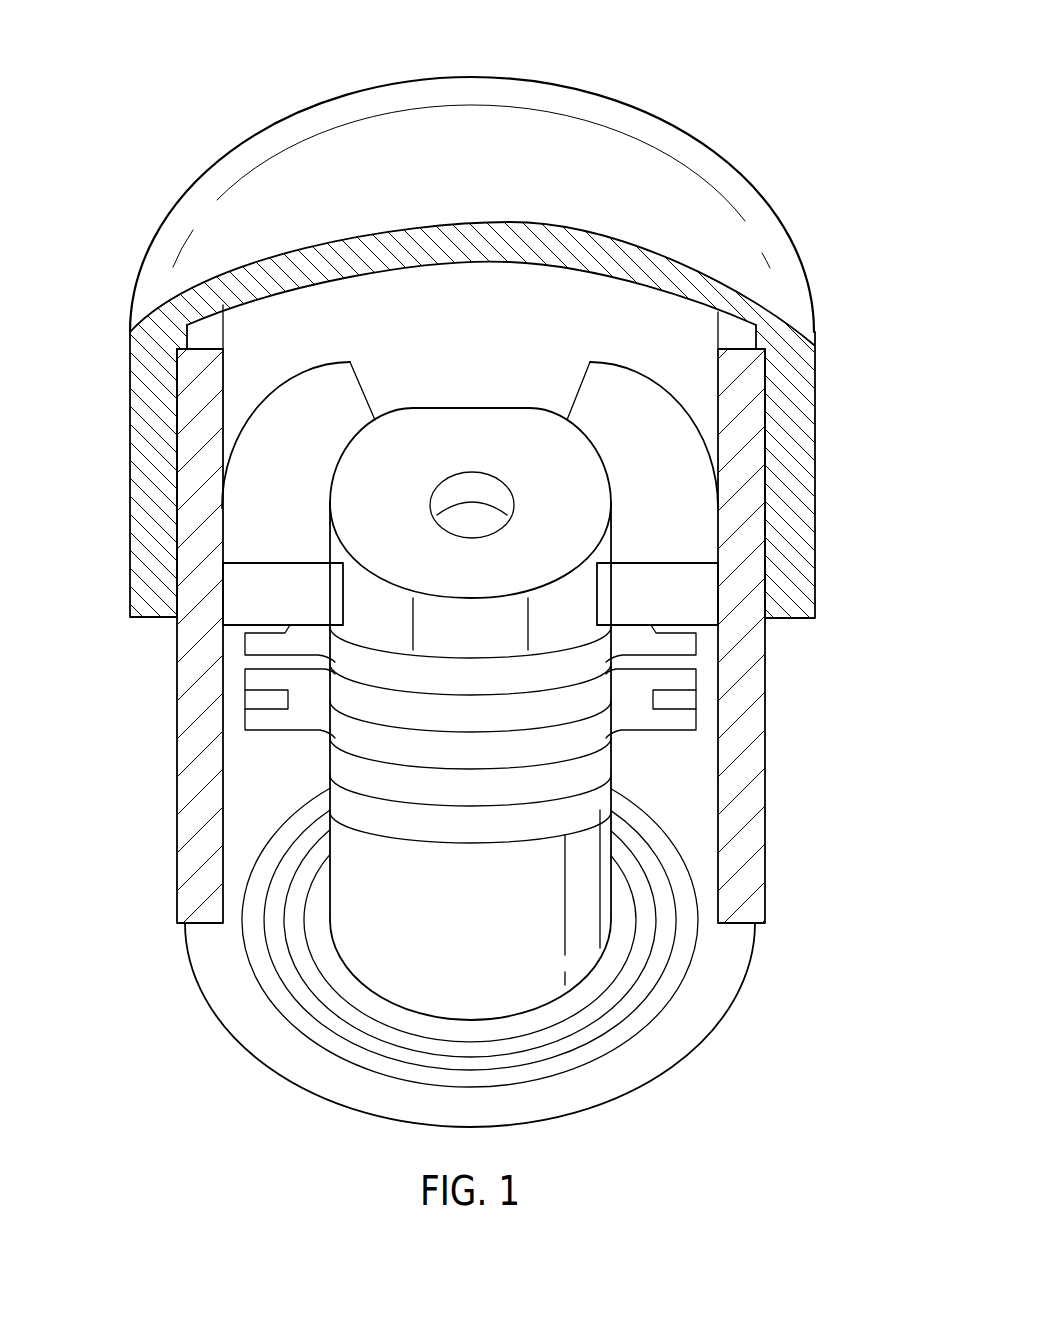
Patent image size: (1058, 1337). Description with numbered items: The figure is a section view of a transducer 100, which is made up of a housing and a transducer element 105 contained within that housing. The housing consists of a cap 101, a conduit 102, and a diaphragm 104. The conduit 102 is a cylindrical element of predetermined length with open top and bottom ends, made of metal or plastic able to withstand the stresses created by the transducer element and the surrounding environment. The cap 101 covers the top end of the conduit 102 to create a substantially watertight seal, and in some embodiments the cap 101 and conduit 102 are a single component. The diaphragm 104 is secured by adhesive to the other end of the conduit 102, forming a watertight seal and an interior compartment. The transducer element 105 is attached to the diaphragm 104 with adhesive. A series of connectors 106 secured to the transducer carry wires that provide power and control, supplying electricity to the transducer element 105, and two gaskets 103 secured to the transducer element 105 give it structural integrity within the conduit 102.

The transducer 100 is at (745, 67).
The cap 101 is at (352, 107).
The conduit 102 is at (190, 748).
The gasket 103 is at (258, 520).
The diaphragm 104 is at (575, 512).
The transducer element 105 is at (517, 992).
The connectors 106 is at (395, 698).